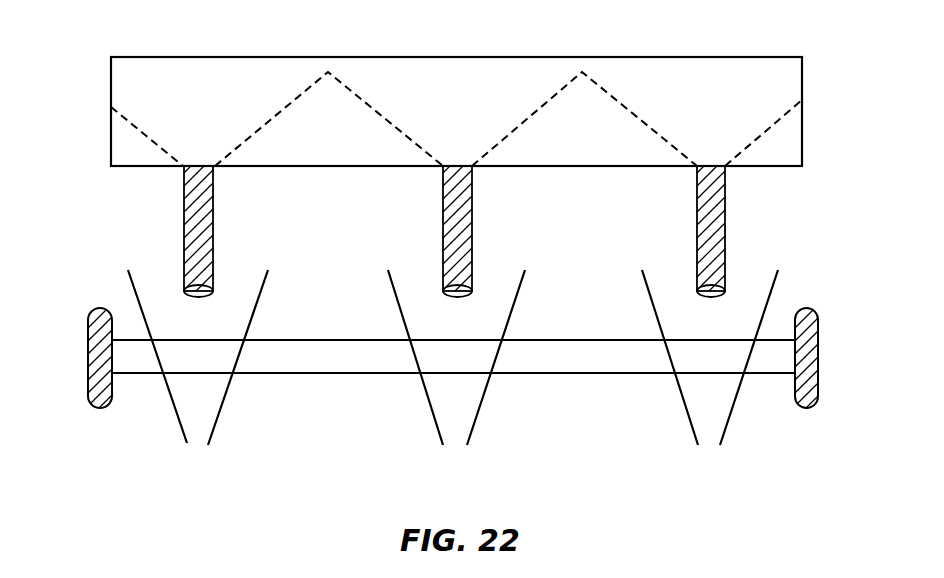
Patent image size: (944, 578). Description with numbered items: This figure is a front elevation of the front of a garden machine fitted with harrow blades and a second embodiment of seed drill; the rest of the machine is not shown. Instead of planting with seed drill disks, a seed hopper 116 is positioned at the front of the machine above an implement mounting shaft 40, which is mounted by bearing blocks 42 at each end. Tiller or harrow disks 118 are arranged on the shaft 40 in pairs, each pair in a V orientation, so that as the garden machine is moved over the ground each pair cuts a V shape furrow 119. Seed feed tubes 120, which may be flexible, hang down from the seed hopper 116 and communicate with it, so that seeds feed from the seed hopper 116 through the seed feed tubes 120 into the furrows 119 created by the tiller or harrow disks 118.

The seed hopper 116 is at (455, 101).
The seed feed tubes 120 is at (443, 223).
The implement mounting shaft 40 is at (613, 355).
The bearing blocks 42 is at (90, 358).
The tiller or harrow disks 118 is at (170, 408).
The V shape furrow 119 is at (198, 440).